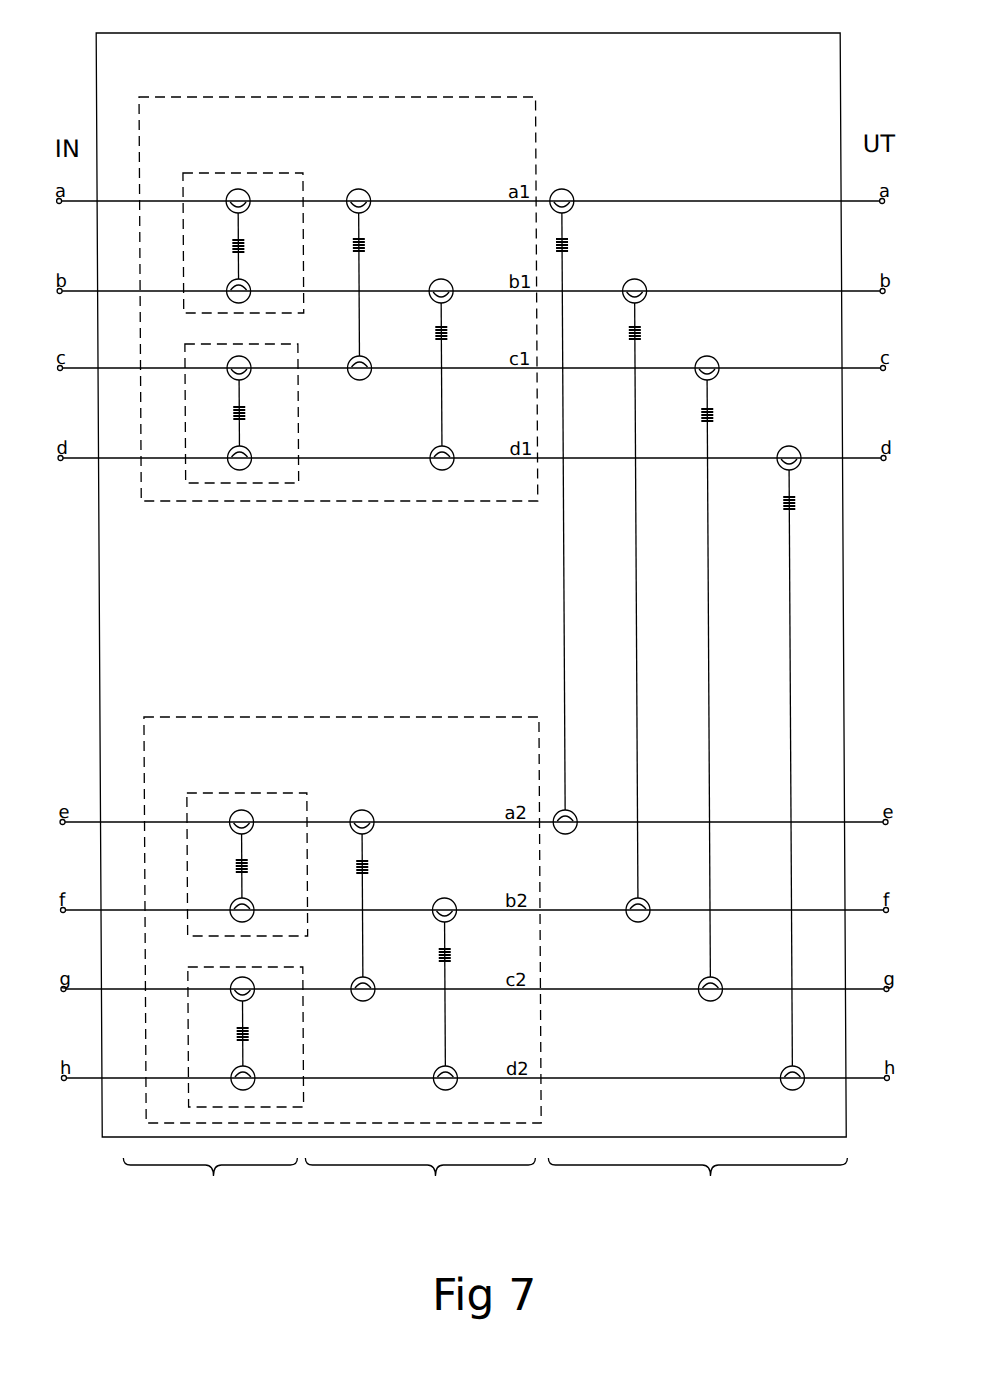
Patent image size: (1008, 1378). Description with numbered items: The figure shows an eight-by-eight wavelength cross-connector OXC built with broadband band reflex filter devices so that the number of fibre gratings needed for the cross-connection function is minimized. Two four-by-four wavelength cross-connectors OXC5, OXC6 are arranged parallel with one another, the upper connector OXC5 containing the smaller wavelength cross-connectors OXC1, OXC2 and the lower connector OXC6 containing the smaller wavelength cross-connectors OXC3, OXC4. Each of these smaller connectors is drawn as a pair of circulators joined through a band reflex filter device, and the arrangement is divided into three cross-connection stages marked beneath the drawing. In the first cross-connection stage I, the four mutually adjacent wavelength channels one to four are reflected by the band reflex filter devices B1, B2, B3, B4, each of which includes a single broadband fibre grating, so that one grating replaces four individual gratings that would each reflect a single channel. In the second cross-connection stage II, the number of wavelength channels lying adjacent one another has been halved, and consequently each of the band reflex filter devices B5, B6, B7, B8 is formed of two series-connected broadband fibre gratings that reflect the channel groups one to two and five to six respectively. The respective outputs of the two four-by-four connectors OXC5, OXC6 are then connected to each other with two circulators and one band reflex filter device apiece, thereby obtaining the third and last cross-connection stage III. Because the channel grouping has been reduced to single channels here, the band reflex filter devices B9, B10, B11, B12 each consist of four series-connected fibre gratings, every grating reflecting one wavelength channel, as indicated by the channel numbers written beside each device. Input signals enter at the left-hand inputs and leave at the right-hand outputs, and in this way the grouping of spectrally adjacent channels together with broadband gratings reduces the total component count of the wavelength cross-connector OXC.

The 8×8 wavelength cross-connector OXC is at (470, 570).
The wavelength cross-connector OXC1 is at (243, 230).
The wavelength cross-connector OXC2 is at (240, 400).
The wavelength cross-connector OXC3 is at (246, 851).
The wavelength cross-connector OXC4 is at (245, 1023).
The 4×4 wavelength cross-connector OXC5 is at (336, 282).
The 4×4 wavelength cross-connector OXC6 is at (341, 904).
The band reflex filter device B1 is at (241, 246).
The band reflex filter device B2 is at (242, 413).
The band reflex filter device B3 is at (244, 866).
The band reflex filter device B4 is at (245, 1033).
The band reflex filter device B5 is at (358, 284).
The band reflex filter device B6 is at (443, 374).
The band reflex filter device B7 is at (362, 905).
The band reflex filter device B8 is at (444, 994).
The band reflex filter device B9 is at (563, 237).
The band reflex filter device B10 is at (636, 600).
The band reflex filter device B11 is at (709, 678).
The band reflex filter device B12 is at (786, 768).
The first cross-connection stage I is at (210, 1192).
The second cross-connection stage II is at (420, 1192).
The third cross-connection stage III is at (697, 1192).